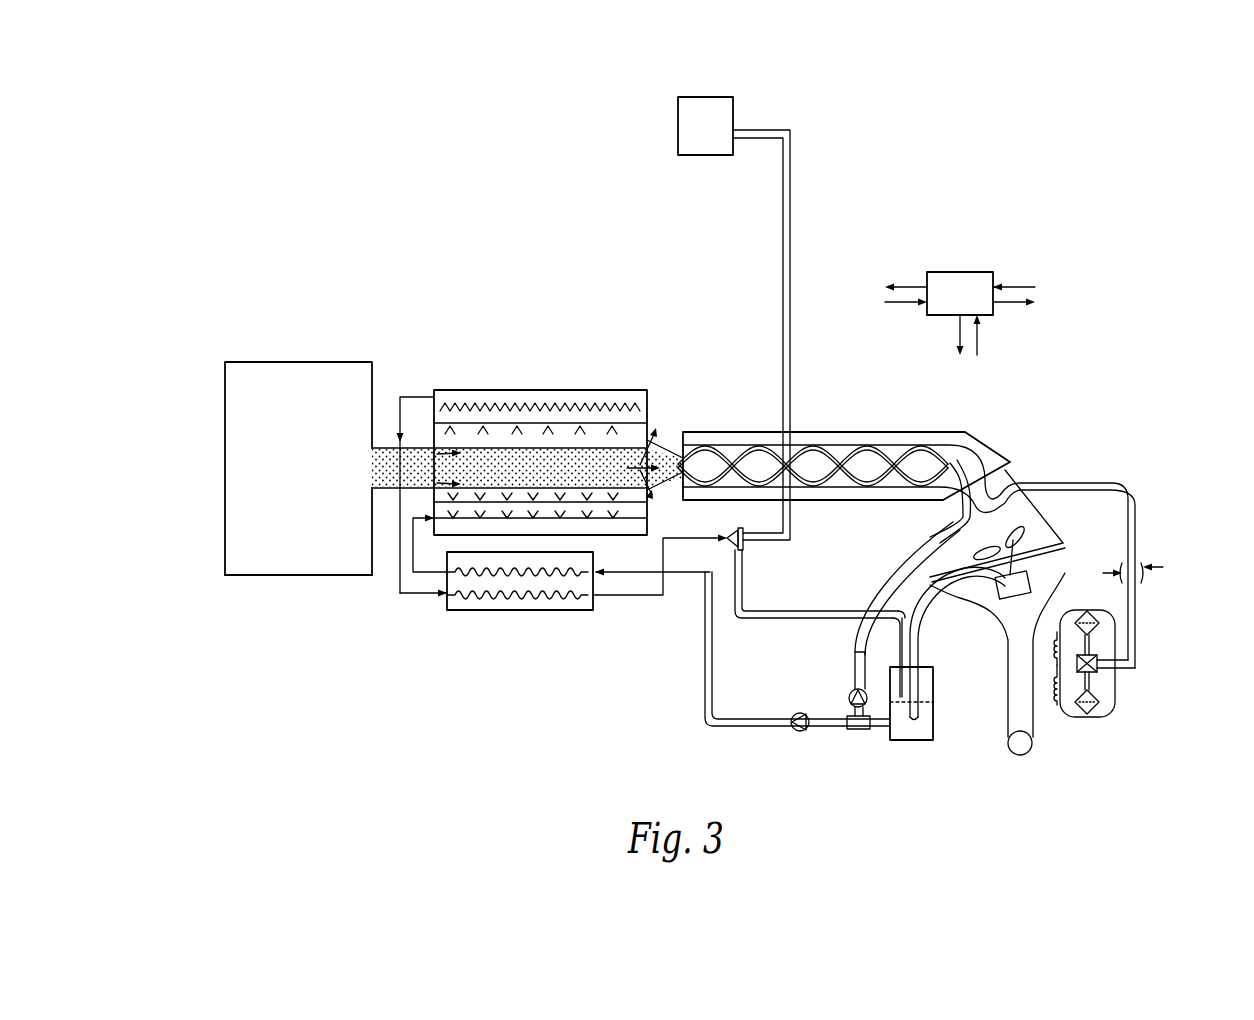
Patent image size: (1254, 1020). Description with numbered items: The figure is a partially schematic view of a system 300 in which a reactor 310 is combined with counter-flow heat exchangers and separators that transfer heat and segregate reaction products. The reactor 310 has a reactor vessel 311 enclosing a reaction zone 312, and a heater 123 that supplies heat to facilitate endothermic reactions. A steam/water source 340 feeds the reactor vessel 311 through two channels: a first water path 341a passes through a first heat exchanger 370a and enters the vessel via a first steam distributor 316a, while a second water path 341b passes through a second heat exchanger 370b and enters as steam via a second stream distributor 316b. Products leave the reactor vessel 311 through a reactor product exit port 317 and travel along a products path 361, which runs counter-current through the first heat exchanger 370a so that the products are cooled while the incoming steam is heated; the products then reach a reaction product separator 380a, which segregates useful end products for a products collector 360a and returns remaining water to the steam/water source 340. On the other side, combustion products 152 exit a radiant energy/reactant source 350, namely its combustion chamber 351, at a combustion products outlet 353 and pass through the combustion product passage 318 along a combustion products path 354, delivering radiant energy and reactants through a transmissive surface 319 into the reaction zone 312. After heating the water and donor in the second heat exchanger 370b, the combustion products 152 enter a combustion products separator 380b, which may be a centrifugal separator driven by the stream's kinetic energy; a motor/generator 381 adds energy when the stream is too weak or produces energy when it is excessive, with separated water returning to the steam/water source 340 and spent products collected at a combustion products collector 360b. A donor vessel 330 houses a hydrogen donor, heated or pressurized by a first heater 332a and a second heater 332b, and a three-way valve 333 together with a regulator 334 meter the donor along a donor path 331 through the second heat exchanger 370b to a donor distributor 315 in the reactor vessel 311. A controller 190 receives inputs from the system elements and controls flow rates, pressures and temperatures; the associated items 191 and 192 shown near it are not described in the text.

The system 300 is at (411, 222).
The radiant energy/reactant source 350 is at (199, 386).
The combustion chamber 351 is at (310, 576).
The combustion products outlet 353 is at (390, 410).
The reactor product exit port 317 is at (434, 397).
The combustion product passage 318 is at (392, 490).
The reactor 310 is at (451, 387).
The reactor vessel 311 is at (530, 390).
The heater 123 is at (493, 408).
The reaction zone 312 is at (558, 409).
The donor distributor 315 is at (578, 415).
The first steam distributor 316a is at (603, 520).
The second stream distributor 316b is at (637, 520).
The transmissive surface 319 is at (455, 455).
The combustion products 152 is at (407, 480).
The combustion products path 354 is at (688, 425).
The second heat exchanger 370b is at (975, 420).
The second water path 341b is at (878, 480).
The donor path 331 is at (838, 436).
The first heat exchanger 370a is at (497, 610).
The products path 361 is at (452, 610).
The first water path 341a is at (620, 575).
The reaction product separator 380a is at (751, 546).
The steam/water source 340 is at (905, 740).
The combustion products separator 380b is at (1027, 530).
The motor/generator 381 is at (1067, 545).
The combustion products collector 360b is at (1025, 755).
The donor vessel 330 is at (1115, 624).
The three-way valve 333 is at (1098, 660).
The first heater 332a is at (1054, 633).
The second heater 332b is at (1060, 705).
The regulator 334 is at (1163, 567).
The products collector 360a is at (678, 128).
The controller 190 is at (958, 272).
The control input 191 is at (1020, 287).
The control output 192 is at (1005, 305).